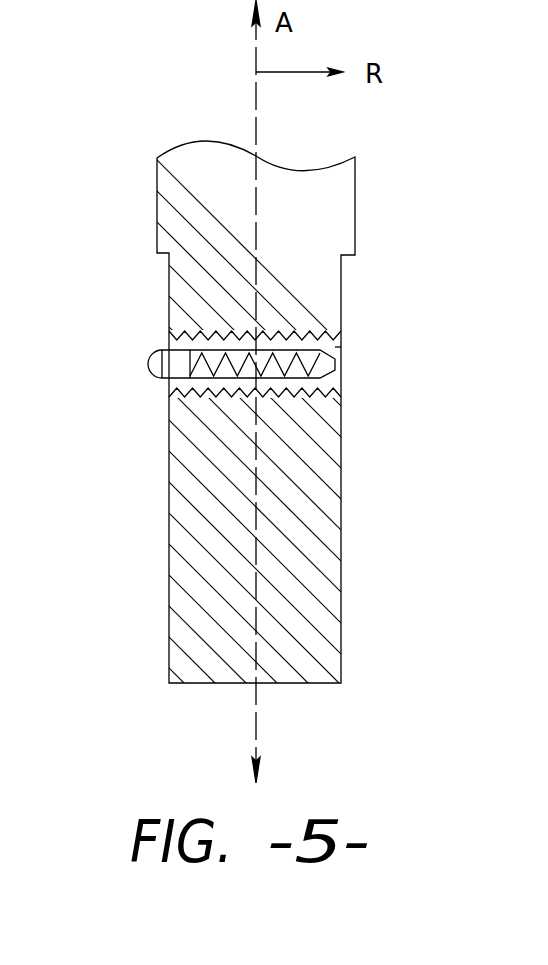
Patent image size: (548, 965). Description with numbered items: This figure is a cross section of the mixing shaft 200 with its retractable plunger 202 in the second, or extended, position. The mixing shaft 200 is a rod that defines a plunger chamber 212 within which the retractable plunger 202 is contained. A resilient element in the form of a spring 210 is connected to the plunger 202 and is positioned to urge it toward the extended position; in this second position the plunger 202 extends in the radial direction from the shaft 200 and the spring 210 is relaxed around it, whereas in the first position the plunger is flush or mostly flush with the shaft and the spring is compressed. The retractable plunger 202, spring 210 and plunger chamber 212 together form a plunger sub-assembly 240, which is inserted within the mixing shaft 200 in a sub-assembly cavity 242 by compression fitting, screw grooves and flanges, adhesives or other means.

The mixing shaft 200 is at (163, 107).
The retractable plunger 202 is at (158, 356).
The spring 210 is at (166, 372).
The plunger chamber 212 is at (346, 347).
The plunger sub-assembly 240 is at (163, 339).
The sub-assembly cavity 242 is at (190, 337).